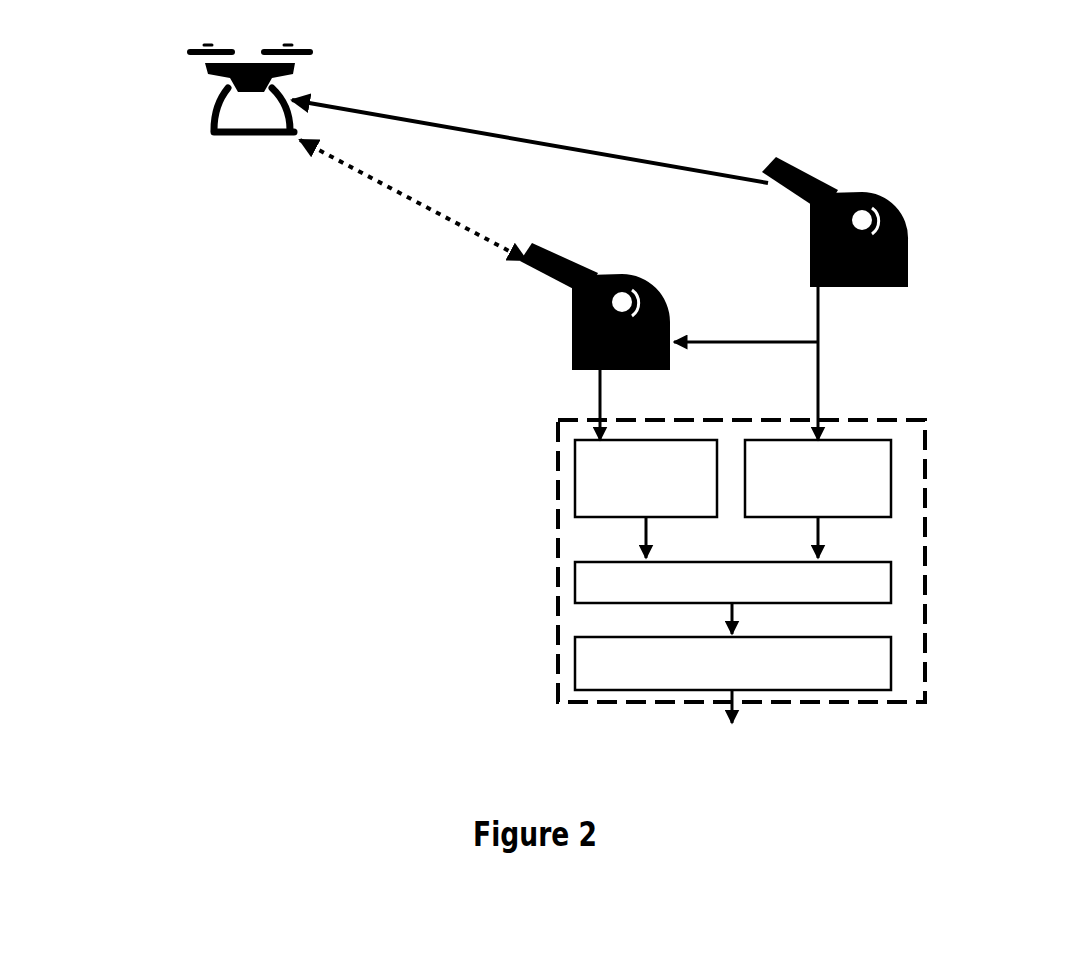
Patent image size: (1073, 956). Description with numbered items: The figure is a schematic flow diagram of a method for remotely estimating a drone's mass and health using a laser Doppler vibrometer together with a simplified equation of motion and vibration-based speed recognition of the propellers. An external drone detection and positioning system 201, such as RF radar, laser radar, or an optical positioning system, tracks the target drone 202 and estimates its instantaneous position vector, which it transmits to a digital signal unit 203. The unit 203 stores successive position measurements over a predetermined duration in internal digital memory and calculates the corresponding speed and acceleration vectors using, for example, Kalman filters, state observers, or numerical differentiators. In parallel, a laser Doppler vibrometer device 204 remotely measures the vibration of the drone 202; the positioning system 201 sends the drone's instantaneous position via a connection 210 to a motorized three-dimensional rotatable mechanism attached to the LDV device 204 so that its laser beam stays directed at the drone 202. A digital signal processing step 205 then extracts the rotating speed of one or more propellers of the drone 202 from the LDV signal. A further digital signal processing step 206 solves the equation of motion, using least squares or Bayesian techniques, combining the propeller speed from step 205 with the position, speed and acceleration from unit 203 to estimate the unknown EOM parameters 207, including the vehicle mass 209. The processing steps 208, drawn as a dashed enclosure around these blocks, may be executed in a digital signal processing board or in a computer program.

The external drone detection and positioning system 201 is at (876, 186).
The target drone 202 is at (210, 112).
The digital signal unit 203 is at (882, 488).
The laser Doppler vibrometer device 204 is at (568, 340).
The digital signal processing step 205 is at (576, 492).
The digital signal processing step 206 is at (892, 580).
The unknown EOM parameters 207 is at (892, 665).
The processing steps 208 is at (925, 430).
The vehicle mass 209 is at (733, 734).
The connection 210 is at (746, 317).